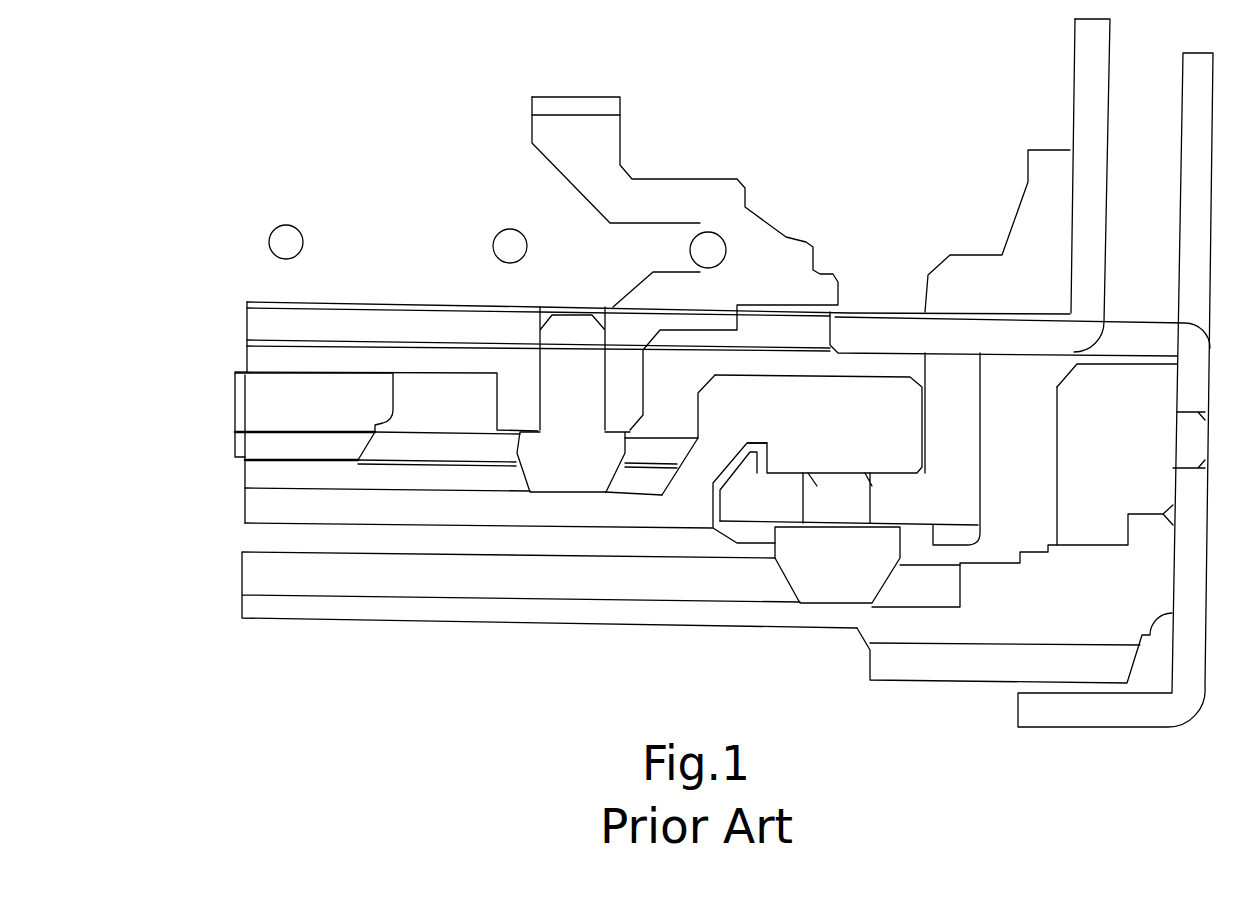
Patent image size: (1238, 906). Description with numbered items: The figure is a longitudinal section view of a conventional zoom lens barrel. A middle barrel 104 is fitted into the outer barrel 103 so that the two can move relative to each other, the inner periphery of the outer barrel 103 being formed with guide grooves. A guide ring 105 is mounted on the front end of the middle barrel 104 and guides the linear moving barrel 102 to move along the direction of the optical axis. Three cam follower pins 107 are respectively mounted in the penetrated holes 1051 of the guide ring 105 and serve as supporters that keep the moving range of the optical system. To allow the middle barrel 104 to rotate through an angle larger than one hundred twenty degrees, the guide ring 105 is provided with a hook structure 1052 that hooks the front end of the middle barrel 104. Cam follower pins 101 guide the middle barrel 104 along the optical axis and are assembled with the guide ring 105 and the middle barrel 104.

The cam follower pin 101 is at (550, 370).
The linear moving barrel 102 is at (608, 162).
The outer barrel 103 is at (262, 605).
The middle barrel 104 is at (252, 503).
The guide ring 105 is at (948, 373).
The penetrated hole 1051 is at (873, 480).
The hook structure 1052 is at (757, 488).
The cam follower pin 107 is at (823, 582).